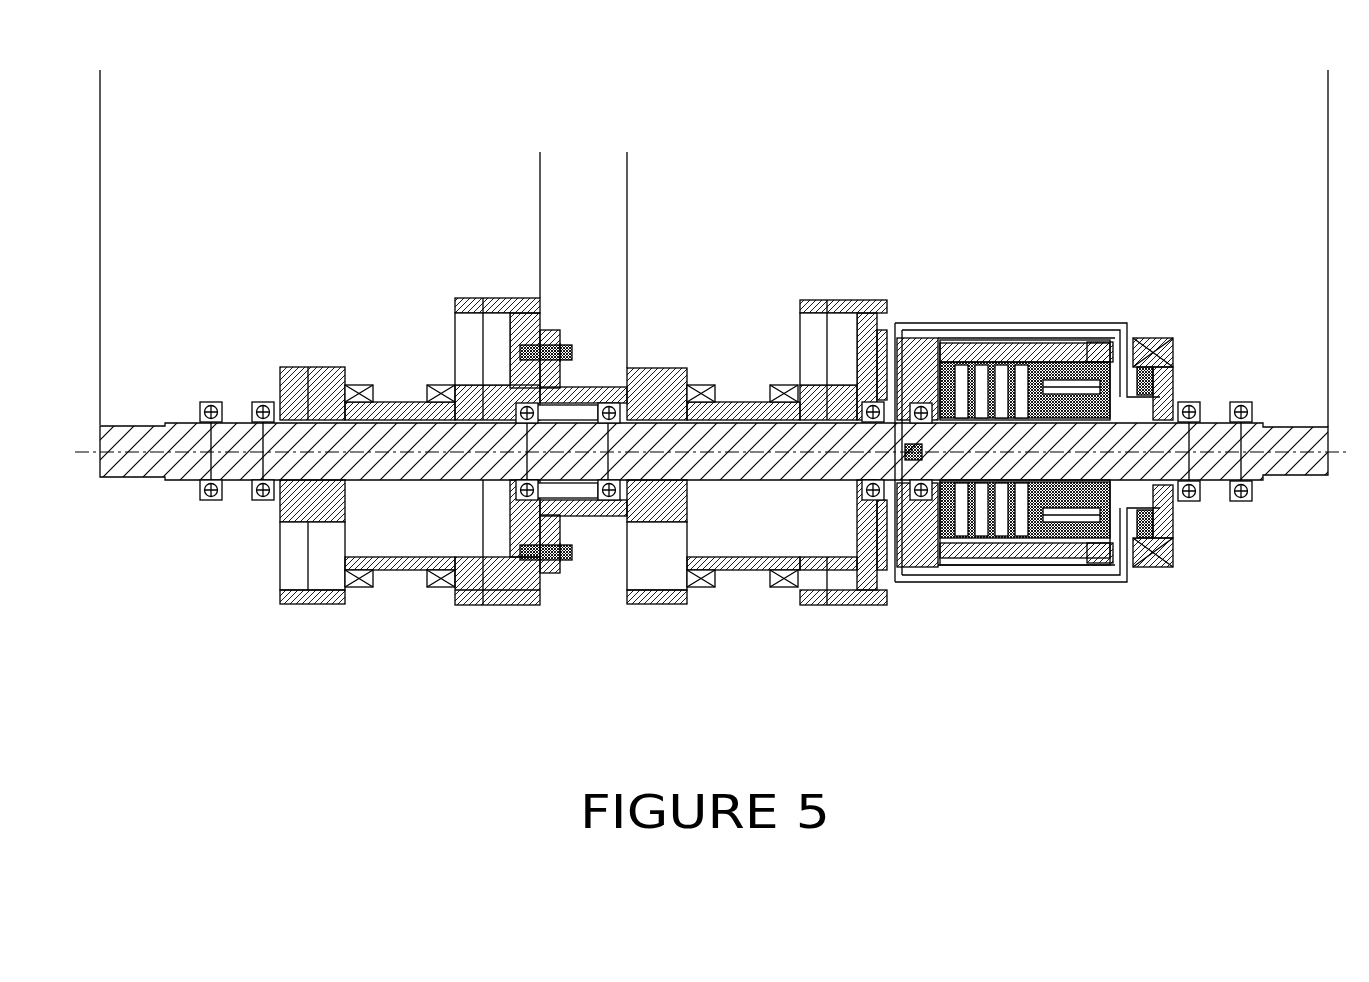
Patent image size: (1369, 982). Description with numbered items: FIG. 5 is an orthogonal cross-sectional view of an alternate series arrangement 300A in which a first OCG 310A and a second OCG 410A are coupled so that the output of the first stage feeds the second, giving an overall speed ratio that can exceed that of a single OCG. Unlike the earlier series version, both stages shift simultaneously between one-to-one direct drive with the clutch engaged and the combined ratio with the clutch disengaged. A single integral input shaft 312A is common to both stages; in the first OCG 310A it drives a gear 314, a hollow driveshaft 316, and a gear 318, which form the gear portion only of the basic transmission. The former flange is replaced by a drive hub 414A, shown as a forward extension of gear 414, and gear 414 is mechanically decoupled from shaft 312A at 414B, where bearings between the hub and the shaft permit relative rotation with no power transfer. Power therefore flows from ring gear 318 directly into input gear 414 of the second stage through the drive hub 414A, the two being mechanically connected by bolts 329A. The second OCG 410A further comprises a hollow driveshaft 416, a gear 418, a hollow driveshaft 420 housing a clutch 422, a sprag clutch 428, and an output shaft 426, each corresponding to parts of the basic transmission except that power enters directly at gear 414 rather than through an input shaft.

The alternate series arrangement 300A is at (100, 76).
The first OCG 310A is at (540, 158).
The second OCG 410A is at (1328, 158).
The input shaft 312A is at (132, 462).
The gear 314 is at (277, 393).
The hollow driveshaft 316 is at (400, 570).
The gear 318 is at (483, 312).
The drive hub 414A is at (592, 387).
The decoupling location 414B is at (675, 366).
The fastener 329A is at (575, 548).
The gear 414 is at (653, 424).
The hollow driveshaft 416 is at (743, 570).
The gear 418 is at (828, 563).
The hollow driveshaft 420 is at (1015, 582).
The clutch 422 is at (985, 425).
The output shaft 426 is at (1297, 467).
The sprag clutch 428 is at (1153, 510).